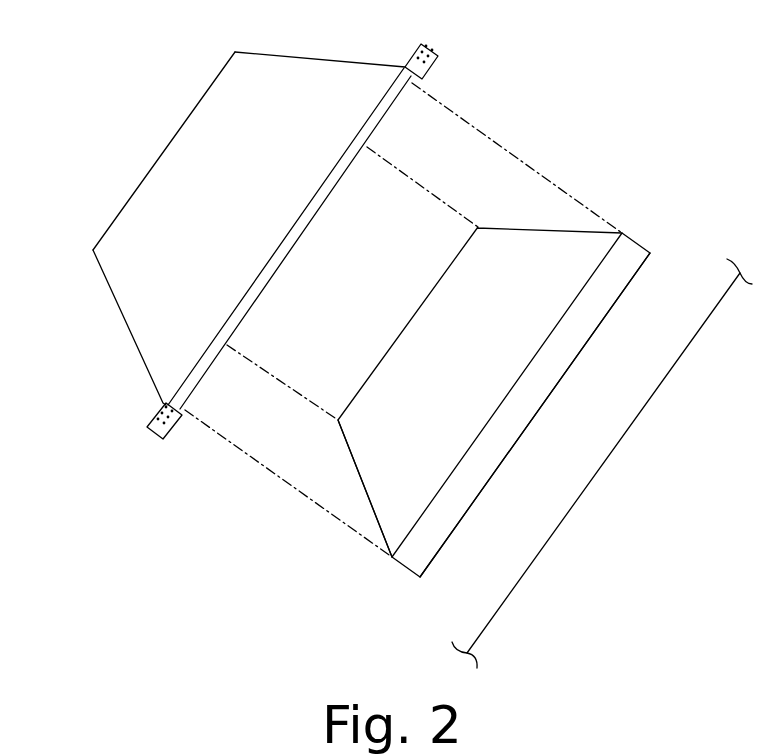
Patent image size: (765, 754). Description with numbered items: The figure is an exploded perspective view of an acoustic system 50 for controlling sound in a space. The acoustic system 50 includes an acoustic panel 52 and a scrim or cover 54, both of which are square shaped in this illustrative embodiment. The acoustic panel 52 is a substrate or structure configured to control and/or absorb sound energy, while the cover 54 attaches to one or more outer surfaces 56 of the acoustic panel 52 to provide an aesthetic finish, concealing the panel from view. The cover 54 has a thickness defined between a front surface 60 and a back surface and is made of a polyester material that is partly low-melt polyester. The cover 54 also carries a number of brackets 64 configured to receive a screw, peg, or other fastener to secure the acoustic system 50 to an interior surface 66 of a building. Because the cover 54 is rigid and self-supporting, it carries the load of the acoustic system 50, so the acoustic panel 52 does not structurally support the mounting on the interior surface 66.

The acoustic system 50 is at (92, 115).
The acoustic panel 52 is at (637, 242).
The cover 54 is at (325, 61).
The outer surfaces 56 is at (368, 463).
The front surface 60 is at (140, 318).
The brackets 64 is at (428, 44).
The interior surface 66 is at (590, 484).